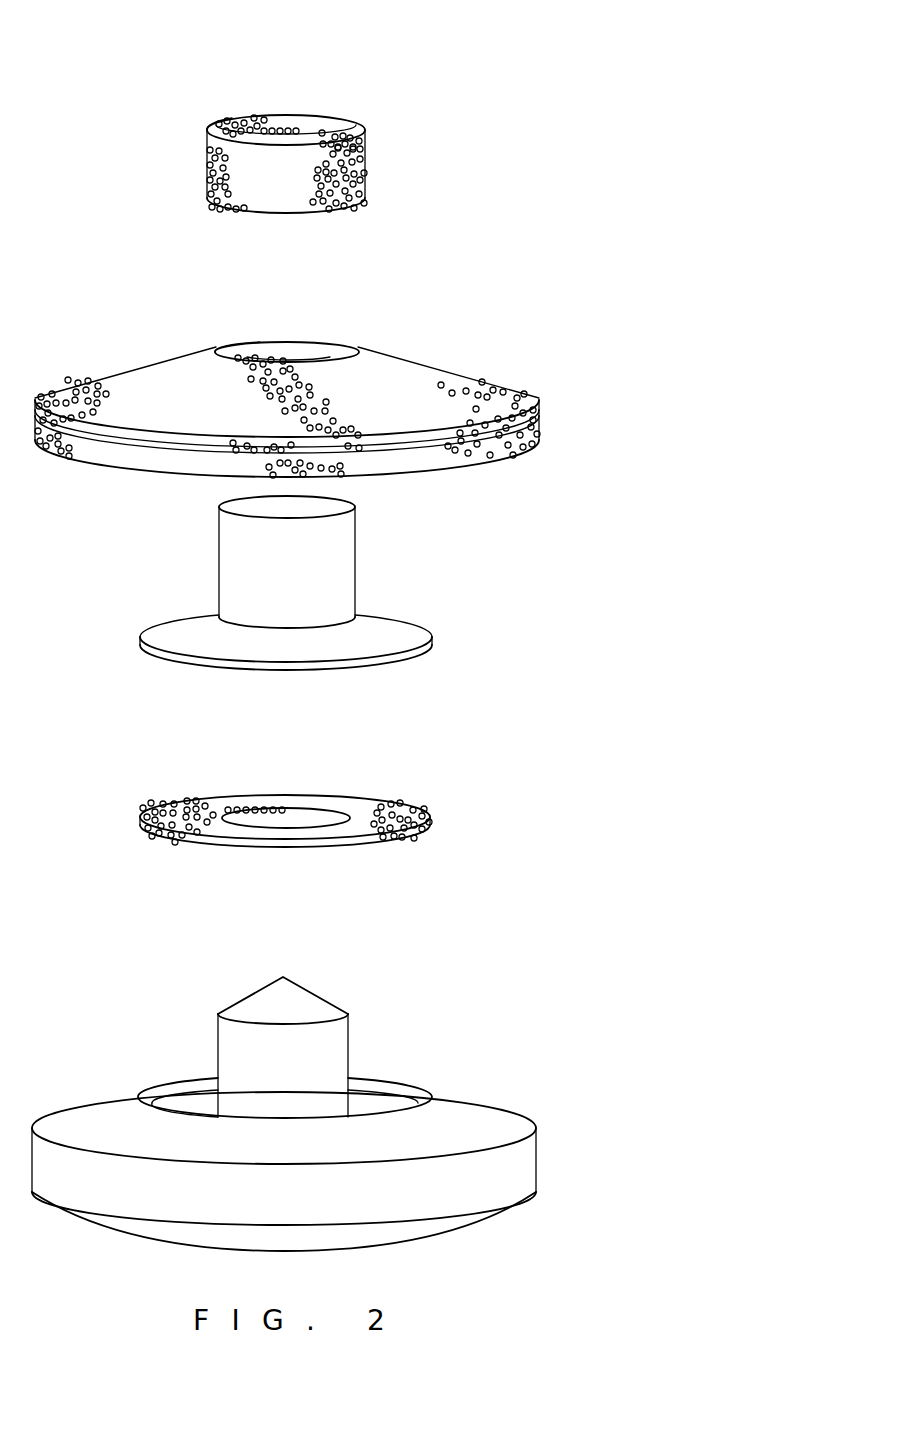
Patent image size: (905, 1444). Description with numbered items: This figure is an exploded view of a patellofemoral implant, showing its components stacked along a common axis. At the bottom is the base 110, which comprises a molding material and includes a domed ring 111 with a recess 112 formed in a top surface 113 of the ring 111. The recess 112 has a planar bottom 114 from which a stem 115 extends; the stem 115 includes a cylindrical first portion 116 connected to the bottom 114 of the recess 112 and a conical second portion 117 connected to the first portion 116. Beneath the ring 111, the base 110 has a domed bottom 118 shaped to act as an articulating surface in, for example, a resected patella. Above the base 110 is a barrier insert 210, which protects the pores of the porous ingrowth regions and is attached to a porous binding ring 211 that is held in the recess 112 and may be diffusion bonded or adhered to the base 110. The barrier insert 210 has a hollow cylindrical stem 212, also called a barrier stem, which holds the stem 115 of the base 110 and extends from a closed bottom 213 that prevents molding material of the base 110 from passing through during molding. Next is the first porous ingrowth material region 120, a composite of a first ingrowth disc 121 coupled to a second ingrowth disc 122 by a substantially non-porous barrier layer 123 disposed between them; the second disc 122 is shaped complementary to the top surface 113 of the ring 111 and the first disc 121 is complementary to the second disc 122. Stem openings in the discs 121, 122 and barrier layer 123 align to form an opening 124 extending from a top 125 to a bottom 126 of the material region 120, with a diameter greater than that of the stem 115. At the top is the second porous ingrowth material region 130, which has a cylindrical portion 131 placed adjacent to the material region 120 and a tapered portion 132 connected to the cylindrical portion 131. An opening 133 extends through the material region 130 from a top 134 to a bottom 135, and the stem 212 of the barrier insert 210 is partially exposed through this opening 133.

The base 110 is at (344, 1106).
The domed ring 111 is at (516, 1124).
The recess 112 is at (392, 1090).
The top surface 113 is at (431, 1090).
The planar bottom 114 is at (177, 1106).
The stem 115 is at (309, 1020).
The cylindrical first portion 116 is at (218, 1053).
The conical second portion 117 is at (349, 1025).
The domed bottom 118 is at (424, 1234).
The first porous ingrowth material region 120 is at (341, 383).
The first ingrowth disc 121 is at (513, 395).
The second ingrowth disc 122 is at (327, 470).
The barrier layer 123 is at (540, 430).
The opening 124 is at (287, 346).
The top 125 is at (243, 348).
The bottom 126 is at (450, 468).
The second porous ingrowth material region 130 is at (304, 140).
The cylindrical portion 131 is at (208, 182).
The tapered portion 132 is at (217, 130).
The opening 133 is at (318, 120).
The top 134 is at (279, 126).
The bottom 135 is at (302, 230).
The barrier insert 210 is at (308, 603).
The porous binding ring 211 is at (390, 810).
The stem 212 is at (256, 505).
The closed bottom 213 is at (237, 663).